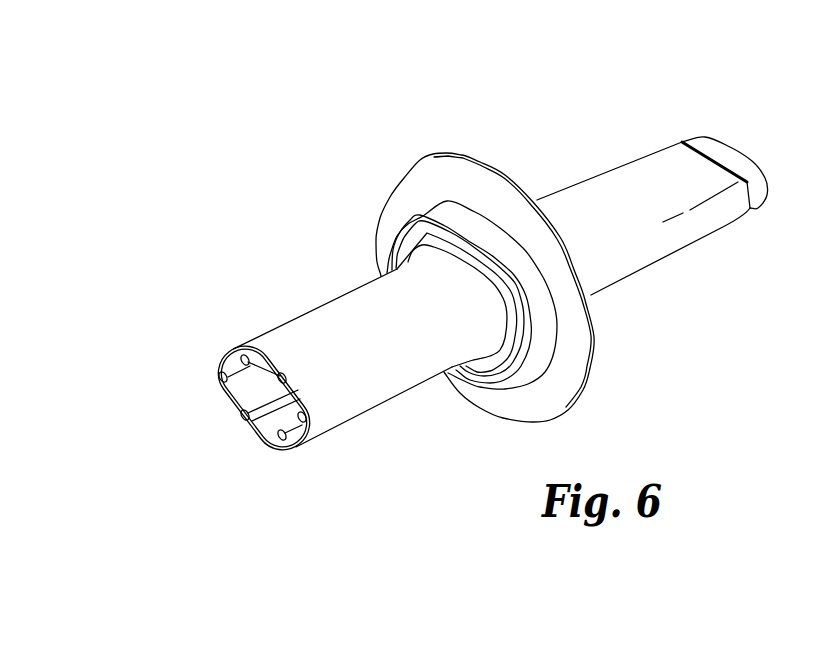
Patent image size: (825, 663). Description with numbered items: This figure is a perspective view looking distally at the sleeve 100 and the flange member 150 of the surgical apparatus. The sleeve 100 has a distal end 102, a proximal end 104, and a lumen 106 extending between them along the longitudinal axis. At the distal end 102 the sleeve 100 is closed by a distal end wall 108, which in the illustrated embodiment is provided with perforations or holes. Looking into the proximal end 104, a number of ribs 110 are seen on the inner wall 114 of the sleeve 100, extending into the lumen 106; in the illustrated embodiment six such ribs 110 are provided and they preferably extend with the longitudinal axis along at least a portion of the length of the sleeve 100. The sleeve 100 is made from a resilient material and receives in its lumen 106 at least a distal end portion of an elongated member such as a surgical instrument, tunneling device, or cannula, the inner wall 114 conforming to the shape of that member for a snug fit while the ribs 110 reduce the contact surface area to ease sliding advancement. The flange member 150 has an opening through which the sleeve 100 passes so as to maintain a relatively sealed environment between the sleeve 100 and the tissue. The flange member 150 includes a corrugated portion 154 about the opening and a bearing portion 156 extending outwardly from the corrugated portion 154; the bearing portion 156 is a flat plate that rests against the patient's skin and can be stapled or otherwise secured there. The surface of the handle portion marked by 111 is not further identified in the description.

The sleeve 100 is at (377, 412).
The distal end 102 is at (682, 142).
The proximal end 104 is at (238, 348).
The lumen 106 is at (240, 397).
The distal end wall 108 is at (750, 160).
The ribs 110 is at (244, 355).
The handle surface 111 is at (648, 249).
The inner wall 114 is at (273, 425).
The flange member 150 is at (566, 412).
The corrugated portion 154 is at (427, 217).
The bearing portion 156 is at (578, 369).